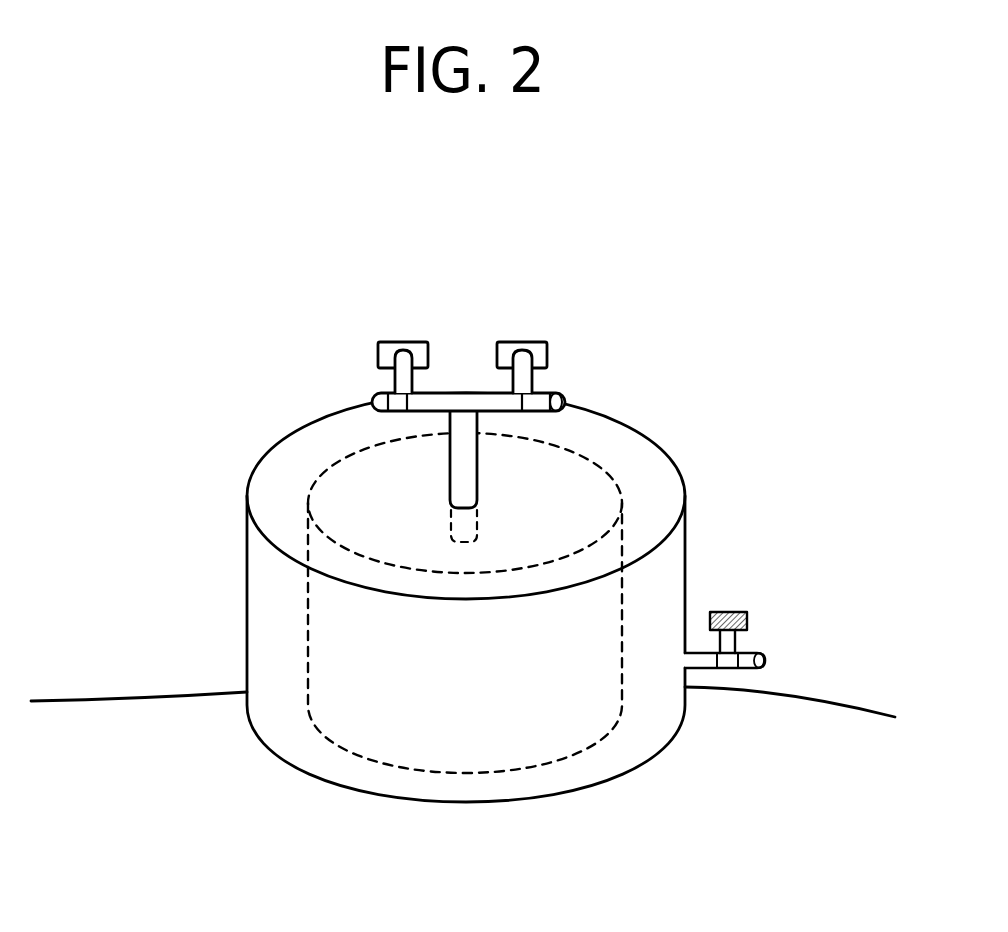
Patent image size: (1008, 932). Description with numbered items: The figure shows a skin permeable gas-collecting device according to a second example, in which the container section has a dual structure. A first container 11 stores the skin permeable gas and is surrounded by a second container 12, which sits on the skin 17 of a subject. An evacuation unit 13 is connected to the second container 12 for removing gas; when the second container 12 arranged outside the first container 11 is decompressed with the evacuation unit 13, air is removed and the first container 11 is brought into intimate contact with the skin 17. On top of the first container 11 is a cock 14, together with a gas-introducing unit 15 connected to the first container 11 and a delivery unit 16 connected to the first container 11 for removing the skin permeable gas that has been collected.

The first container 11 is at (357, 508).
The second container 12 is at (263, 660).
The evacuation unit 13 is at (757, 648).
The cock 14 is at (473, 362).
The gas-introducing unit 15 is at (374, 392).
The delivery unit 16 is at (556, 394).
The skin of a subject 17 is at (822, 697).